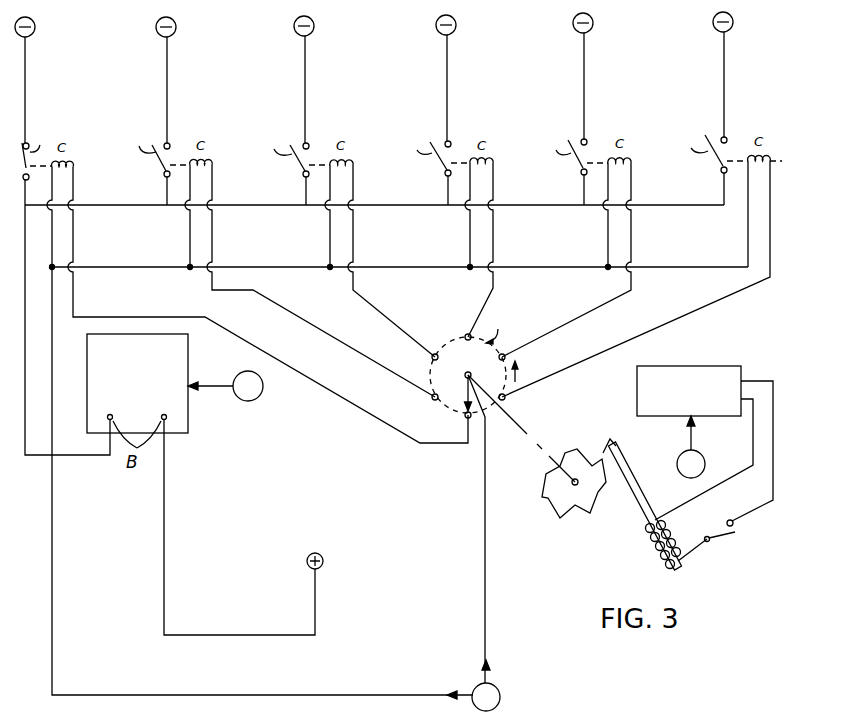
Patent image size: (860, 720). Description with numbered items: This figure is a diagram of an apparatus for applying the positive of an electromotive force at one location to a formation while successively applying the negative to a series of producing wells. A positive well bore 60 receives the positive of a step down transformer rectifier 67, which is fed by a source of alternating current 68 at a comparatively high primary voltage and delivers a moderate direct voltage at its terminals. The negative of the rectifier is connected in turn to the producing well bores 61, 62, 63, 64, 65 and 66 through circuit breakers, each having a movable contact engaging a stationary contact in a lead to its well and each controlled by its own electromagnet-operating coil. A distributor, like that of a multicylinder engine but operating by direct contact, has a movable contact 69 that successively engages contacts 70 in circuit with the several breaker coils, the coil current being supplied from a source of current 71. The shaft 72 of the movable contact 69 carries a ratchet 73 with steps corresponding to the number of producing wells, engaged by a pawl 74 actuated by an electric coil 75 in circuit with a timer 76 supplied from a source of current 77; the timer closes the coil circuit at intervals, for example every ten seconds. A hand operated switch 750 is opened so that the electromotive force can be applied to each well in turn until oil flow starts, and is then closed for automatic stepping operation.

The positive well bore 60 is at (323, 562).
The producing well bore 61 is at (34, 31).
The producing well bore 62 is at (174, 33).
The producing well bore 63 is at (312, 32).
The producing well bore 64 is at (455, 32).
The producing well bore 65 is at (592, 30).
The producing well bore 66 is at (726, 57).
The step down transformer rectifier 67 is at (188, 368).
The source of alternating current 68 is at (250, 401).
The movable contact 69 is at (430, 378).
The contacts 70 is at (465, 416).
The source of current 71 is at (500, 695).
The shaft 72 is at (527, 433).
The ratchet 73 is at (566, 498).
The pawl 74 is at (633, 472).
The electric coil 75 is at (658, 547).
The timer 76 is at (692, 365).
The source of current 77 is at (705, 463).
The hand operated switch 750 is at (709, 541).